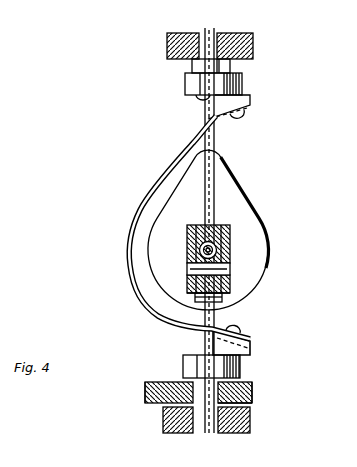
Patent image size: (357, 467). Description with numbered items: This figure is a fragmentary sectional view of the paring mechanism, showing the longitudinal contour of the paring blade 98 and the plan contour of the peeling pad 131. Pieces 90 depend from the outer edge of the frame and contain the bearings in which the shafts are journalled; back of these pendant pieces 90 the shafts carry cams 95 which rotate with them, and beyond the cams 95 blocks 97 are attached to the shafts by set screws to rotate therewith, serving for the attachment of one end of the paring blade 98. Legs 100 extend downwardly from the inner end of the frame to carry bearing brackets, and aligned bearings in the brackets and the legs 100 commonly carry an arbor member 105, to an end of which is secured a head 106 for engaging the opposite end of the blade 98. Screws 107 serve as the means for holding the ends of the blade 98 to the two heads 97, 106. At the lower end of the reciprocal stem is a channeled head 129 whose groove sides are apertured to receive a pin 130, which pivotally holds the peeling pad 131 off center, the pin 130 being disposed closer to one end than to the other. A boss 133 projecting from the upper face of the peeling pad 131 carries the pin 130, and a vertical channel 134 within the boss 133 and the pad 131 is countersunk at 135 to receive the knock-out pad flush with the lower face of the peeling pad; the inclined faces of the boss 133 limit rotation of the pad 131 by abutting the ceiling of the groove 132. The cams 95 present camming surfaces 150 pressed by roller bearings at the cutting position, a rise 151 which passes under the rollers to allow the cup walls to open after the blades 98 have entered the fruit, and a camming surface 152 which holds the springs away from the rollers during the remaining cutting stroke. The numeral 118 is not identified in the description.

The arbor member 105 is at (210, 33).
The legs 100 is at (253, 46).
The head 106 is at (244, 85).
The screws 107 is at (245, 117).
The paring blade 98 is at (159, 179).
The peeling pad 131 is at (244, 210).
The boss 133 is at (213, 225).
The pin 130 is at (229, 271).
The countersink 135 is at (226, 239).
The channel 134 is at (228, 249).
The shaft 118 is at (226, 257).
The channeled head 129 is at (229, 284).
The groove 132 is at (229, 292).
The blocks 97 is at (243, 365).
The cams 95 is at (165, 382).
The camming surface 152 is at (145, 389).
The camming surfaces 150 is at (253, 388).
The rise 151 is at (255, 399).
The pieces 90 is at (245, 423).